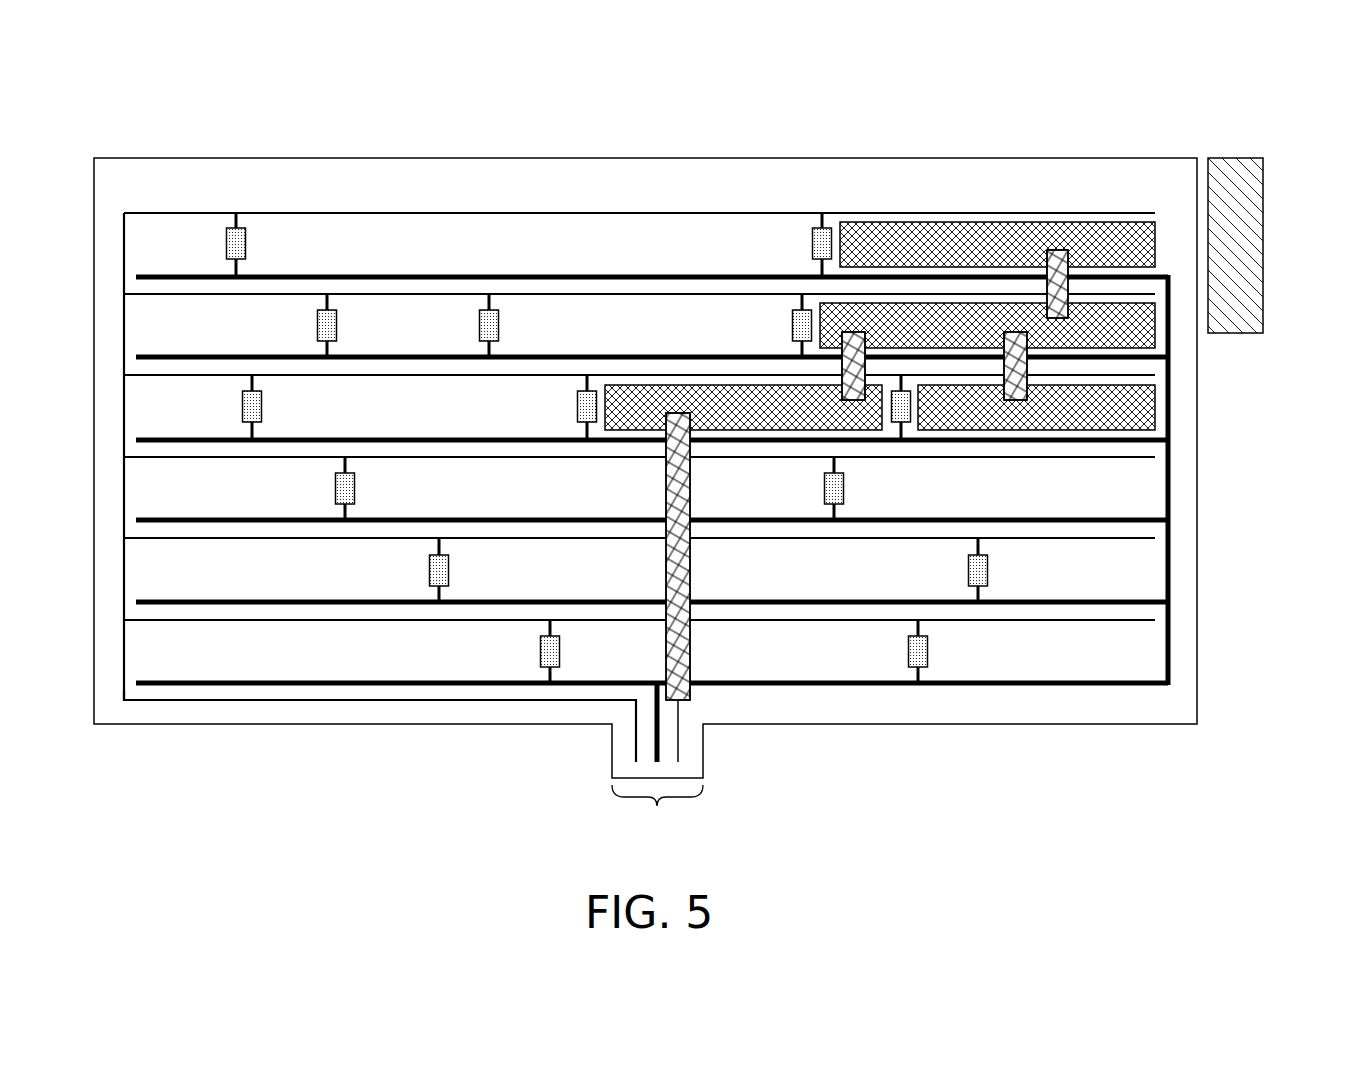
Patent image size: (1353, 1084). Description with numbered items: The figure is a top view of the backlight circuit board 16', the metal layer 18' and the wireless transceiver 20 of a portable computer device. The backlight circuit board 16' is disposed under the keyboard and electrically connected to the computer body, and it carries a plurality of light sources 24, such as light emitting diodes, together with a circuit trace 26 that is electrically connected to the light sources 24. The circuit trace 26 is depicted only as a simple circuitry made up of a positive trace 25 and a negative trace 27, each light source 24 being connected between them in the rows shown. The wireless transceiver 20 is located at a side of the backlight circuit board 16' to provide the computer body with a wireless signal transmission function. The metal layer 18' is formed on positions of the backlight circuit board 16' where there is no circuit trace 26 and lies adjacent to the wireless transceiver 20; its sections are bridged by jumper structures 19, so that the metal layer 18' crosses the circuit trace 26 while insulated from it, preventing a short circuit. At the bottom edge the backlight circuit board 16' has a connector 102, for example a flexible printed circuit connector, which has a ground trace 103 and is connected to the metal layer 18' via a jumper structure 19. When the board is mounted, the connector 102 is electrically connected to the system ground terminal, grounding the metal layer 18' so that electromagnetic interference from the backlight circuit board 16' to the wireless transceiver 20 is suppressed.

The backlight circuit board 16' is at (640, 423).
The metal layer 18' is at (880, 263).
The jumper structure 19 is at (849, 333).
The wireless transceiver 20 is at (1250, 190).
The light sources 24 is at (931, 653).
The positive trace 25 is at (378, 702).
The circuit trace 26 is at (127, 703).
The negative trace 27 is at (436, 686).
The connector 102 is at (657, 815).
The ground trace 103 is at (678, 740).